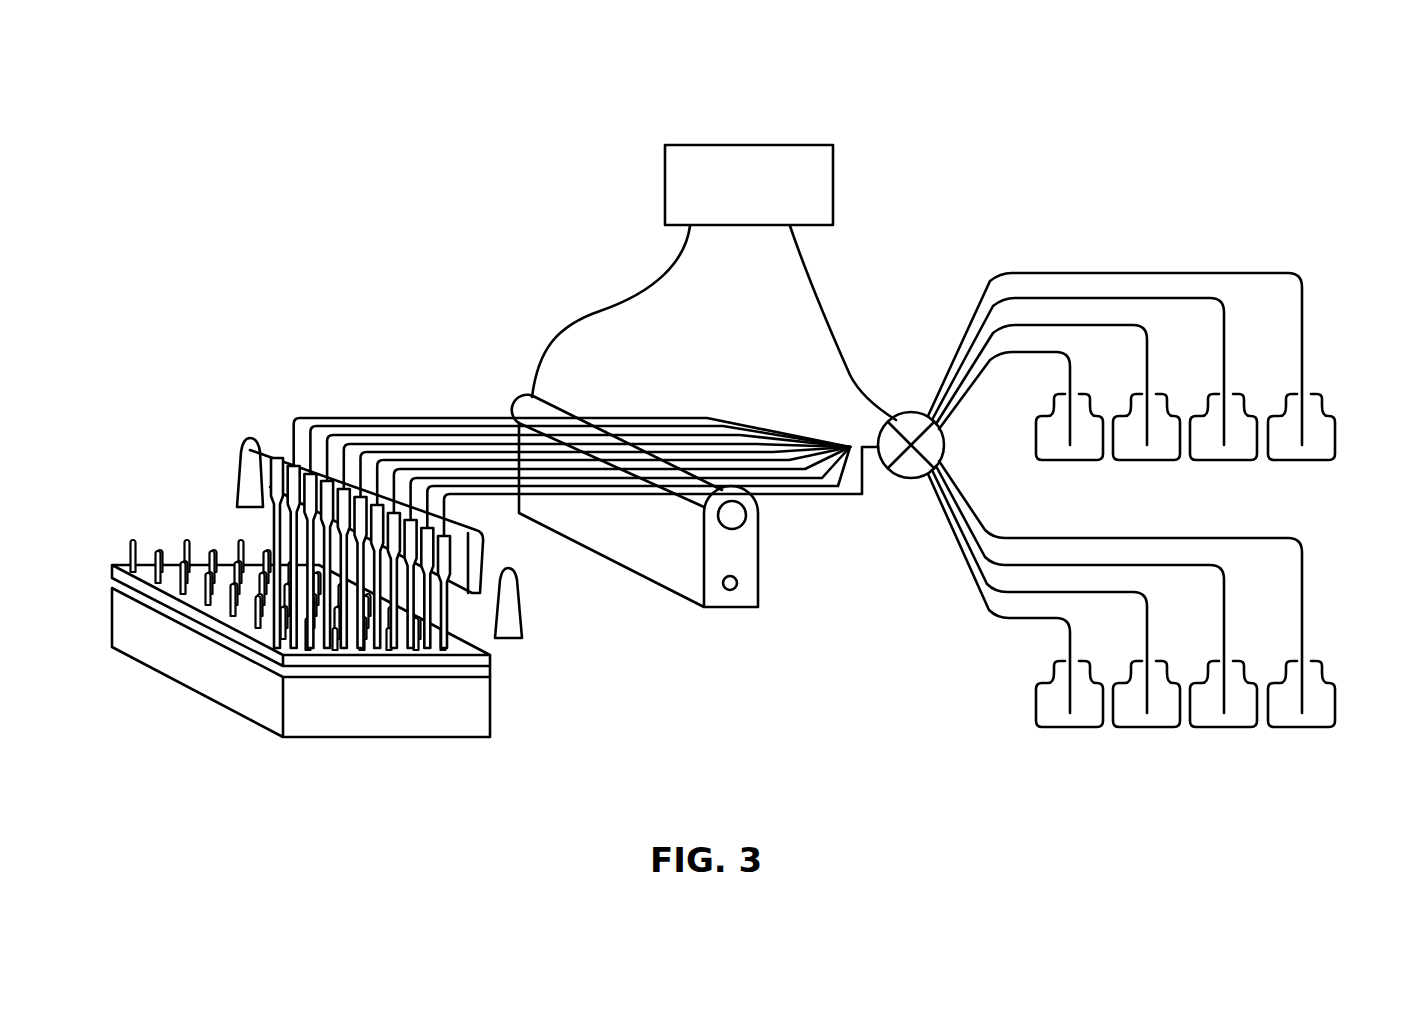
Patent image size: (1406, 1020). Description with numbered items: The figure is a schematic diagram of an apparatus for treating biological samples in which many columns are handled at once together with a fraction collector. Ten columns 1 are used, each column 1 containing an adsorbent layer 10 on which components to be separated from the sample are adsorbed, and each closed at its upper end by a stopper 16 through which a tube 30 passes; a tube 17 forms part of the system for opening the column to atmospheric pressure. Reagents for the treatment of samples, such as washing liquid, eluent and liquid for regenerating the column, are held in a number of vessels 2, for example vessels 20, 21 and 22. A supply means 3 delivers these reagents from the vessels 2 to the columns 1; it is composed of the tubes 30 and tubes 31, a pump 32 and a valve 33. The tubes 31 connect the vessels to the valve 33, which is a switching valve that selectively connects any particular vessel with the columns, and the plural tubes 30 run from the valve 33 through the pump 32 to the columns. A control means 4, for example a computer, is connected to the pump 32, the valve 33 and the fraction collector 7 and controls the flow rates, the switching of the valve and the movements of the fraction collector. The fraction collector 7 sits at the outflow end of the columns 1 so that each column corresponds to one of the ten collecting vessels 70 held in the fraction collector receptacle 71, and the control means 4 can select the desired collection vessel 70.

The column 1 is at (280, 455).
The vessels 2 is at (1170, 587).
The supply means 3 is at (637, 415).
The control means 4 is at (778, 145).
The fraction collector 7 is at (233, 711).
The adsorbent layer 10 is at (270, 487).
The stopper 16 is at (278, 428).
The tube 17 is at (252, 447).
The vessel 20 is at (1040, 728).
The vessel 21 is at (1158, 632).
The vessel 22 is at (1235, 632).
The tube 30 is at (370, 418).
The tubes 31 is at (1145, 273).
The pump 32 is at (638, 539).
The valve 33 is at (908, 480).
The collecting vessel 70 is at (240, 540).
The fraction collector receptacle 71 is at (112, 618).